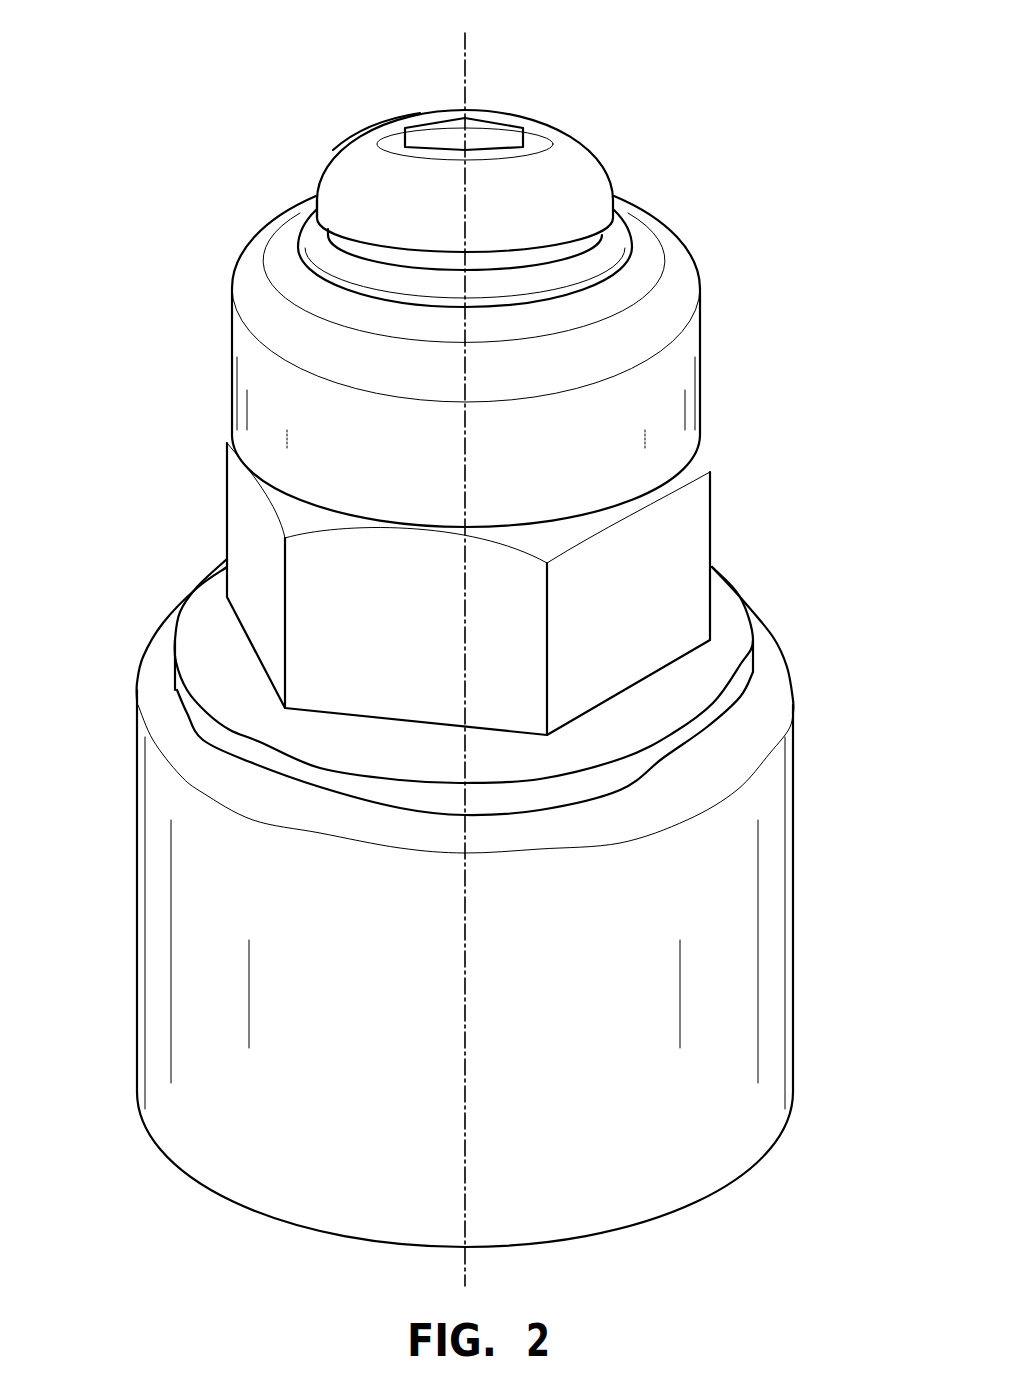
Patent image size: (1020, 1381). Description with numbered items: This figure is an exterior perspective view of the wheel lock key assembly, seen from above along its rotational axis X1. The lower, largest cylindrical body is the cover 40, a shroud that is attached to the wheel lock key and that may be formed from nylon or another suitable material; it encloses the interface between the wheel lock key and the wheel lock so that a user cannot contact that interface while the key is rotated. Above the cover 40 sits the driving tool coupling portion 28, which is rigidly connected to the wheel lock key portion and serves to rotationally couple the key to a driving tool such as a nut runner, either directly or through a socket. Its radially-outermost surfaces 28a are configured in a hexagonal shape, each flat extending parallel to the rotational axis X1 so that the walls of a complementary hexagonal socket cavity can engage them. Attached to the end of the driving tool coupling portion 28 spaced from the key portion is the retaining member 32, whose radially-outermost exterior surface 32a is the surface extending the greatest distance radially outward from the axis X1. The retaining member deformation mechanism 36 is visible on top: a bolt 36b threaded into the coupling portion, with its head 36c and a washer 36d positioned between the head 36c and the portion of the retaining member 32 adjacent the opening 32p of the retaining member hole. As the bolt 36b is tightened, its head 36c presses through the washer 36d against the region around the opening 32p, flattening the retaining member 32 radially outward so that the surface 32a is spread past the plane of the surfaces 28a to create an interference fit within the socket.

The rotational axis X1 is at (467, 88).
The driving tool coupling portion 28 is at (478, 634).
The radially-outermost surfaces 28a is at (627, 605).
The retaining member 32 is at (459, 326).
The radially-outermost exterior surface 32a is at (466, 369).
The opening 32p is at (617, 250).
The retaining member deformation mechanism 36 is at (600, 148).
The bolt 36b is at (338, 167).
The head 36c is at (355, 190).
The washer 36d is at (563, 270).
The cover 40 is at (193, 1039).